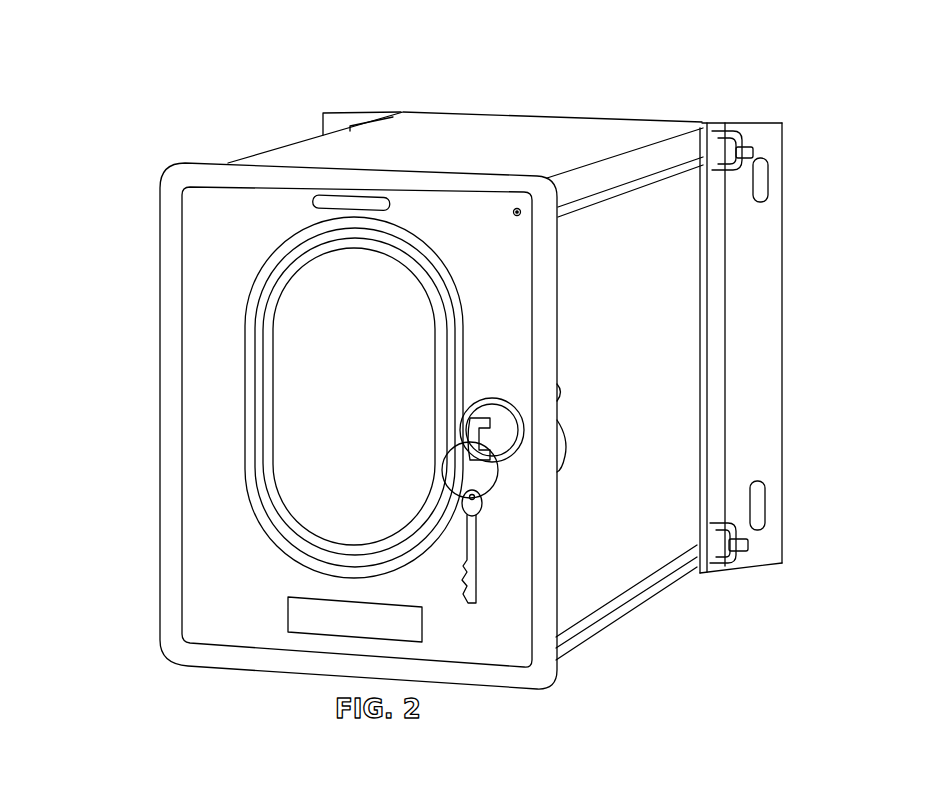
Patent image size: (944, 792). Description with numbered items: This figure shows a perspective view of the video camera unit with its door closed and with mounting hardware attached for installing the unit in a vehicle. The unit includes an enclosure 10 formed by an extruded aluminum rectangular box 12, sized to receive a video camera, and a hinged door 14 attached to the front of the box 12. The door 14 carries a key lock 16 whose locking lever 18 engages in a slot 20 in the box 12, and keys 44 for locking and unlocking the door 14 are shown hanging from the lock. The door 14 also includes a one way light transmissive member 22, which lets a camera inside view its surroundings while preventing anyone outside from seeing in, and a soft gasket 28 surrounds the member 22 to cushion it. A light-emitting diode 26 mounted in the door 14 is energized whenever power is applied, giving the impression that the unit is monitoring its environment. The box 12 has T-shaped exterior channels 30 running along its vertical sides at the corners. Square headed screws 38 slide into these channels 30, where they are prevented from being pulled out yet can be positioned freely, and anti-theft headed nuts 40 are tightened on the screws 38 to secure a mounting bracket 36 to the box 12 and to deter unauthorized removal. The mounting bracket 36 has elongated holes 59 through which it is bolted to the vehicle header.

The enclosure 10 is at (508, 87).
The extruded aluminum rectangular box 12 is at (647, 553).
The hinged door 14 is at (227, 211).
The key lock 16 is at (512, 416).
The locking lever 18 is at (565, 428).
The slot 20 is at (562, 397).
The one way light transmissive member 22 is at (334, 400).
The light-emitting diode 26 is at (519, 209).
The soft gasket 28 is at (285, 523).
The T-shaped exterior channels 30 is at (670, 160).
The mounting brackets 36 is at (765, 378).
The square headed screws 38 is at (752, 148).
The anti-theft headed nuts 40 is at (728, 140).
The keys 44 is at (475, 560).
The elongated holes 59 is at (769, 180).